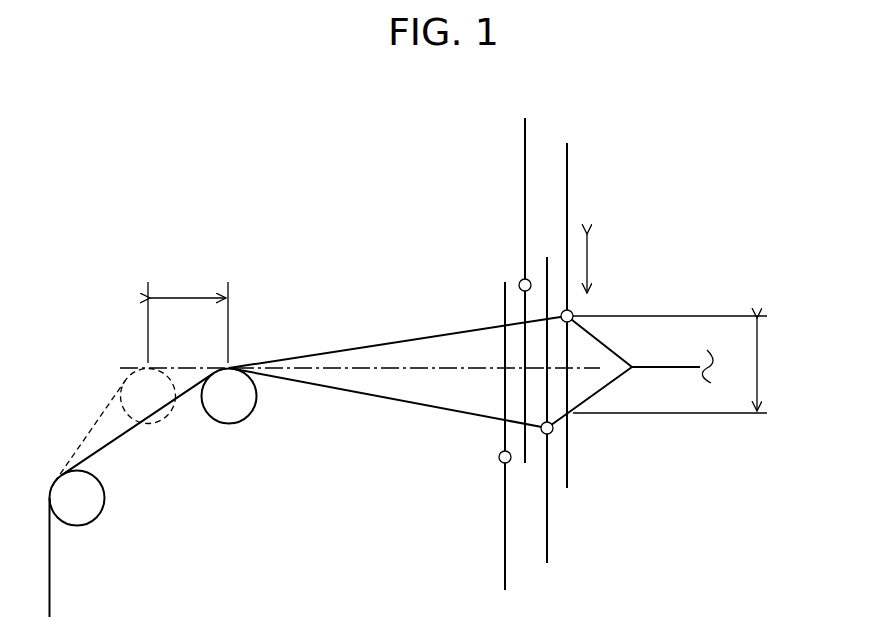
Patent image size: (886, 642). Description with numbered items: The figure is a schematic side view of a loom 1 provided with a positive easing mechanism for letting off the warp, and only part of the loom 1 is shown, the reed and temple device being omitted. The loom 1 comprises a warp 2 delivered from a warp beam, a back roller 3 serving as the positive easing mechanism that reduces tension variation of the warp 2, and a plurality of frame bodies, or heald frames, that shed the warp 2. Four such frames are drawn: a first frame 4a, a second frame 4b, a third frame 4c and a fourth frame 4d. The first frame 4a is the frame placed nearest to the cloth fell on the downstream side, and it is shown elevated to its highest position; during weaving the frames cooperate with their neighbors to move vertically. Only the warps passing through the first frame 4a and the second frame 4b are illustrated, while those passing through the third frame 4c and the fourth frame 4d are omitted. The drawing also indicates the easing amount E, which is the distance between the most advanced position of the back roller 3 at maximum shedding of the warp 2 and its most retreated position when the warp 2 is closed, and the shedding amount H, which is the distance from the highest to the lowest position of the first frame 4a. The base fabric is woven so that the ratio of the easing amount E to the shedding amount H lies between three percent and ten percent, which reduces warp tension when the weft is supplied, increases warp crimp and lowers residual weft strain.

The loom 1 is at (310, 162).
The warp 2 is at (425, 337).
The back roller 3 is at (232, 410).
The first frame 4a is at (569, 202).
The second frame 4b is at (550, 538).
The third frame 4c is at (522, 177).
The fourth frame 4d is at (503, 568).
The easing amount E is at (188, 297).
The shedding amount H is at (760, 365).